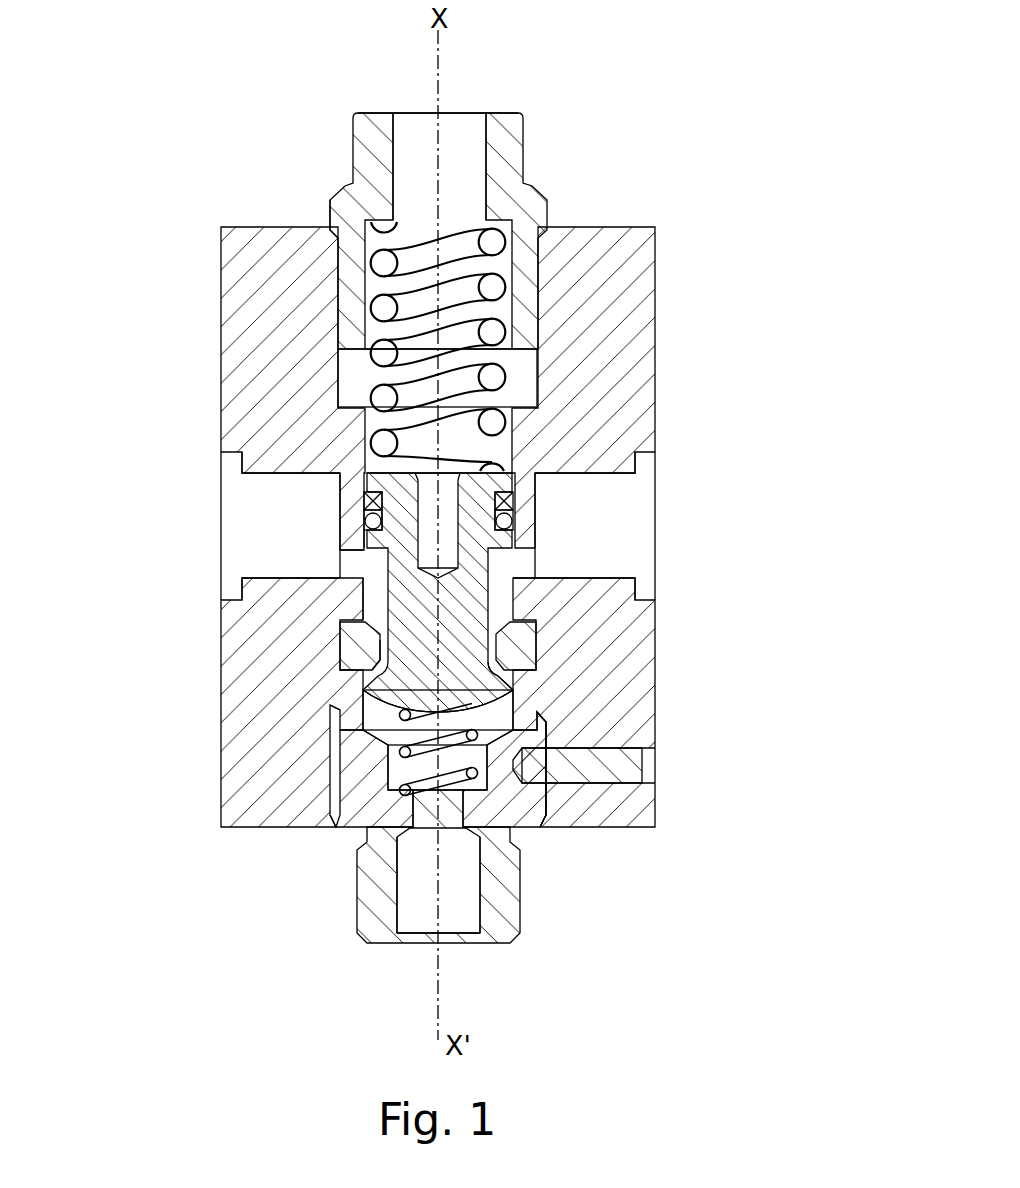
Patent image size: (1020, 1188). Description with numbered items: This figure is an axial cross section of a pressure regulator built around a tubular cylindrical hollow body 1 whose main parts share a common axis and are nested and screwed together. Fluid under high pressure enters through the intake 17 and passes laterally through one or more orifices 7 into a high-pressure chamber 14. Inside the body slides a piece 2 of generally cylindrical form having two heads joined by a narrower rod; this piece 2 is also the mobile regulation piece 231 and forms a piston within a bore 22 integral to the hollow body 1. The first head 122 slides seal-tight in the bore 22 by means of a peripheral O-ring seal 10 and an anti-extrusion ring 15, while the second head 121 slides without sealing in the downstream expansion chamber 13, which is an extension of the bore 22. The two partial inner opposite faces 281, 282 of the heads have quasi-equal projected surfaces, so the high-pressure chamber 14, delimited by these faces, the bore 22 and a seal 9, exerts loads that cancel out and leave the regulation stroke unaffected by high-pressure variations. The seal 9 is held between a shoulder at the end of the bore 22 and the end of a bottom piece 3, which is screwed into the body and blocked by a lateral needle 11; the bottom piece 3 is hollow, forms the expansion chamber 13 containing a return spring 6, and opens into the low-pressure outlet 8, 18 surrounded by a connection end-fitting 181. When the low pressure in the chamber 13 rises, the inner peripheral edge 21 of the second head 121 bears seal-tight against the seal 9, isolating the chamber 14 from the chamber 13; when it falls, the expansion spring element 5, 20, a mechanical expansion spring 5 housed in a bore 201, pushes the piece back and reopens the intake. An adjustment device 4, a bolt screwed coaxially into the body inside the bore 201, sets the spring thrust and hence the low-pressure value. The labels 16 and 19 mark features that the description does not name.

The hollow body 1 is at (598, 245).
The piece of generally cylindrical form with two heads 2 is at (497, 613).
The bottom piece 3 is at (527, 735).
The adjustment device 4 is at (498, 146).
The mechanical expansion spring 5 is at (488, 327).
The return spring 6 is at (480, 780).
The orifices 7 is at (347, 564).
The low-pressure outlet 8 is at (455, 895).
The seal 9 is at (508, 643).
The peripheral O-ring seal 10 is at (506, 522).
The lateral needle 11 is at (603, 766).
The second head 121 is at (473, 700).
The first head 122 is at (383, 484).
The downstream expansion chamber 13 is at (383, 724).
The high-pressure chamber 14 is at (452, 606).
The anti-extrusion ring 15 is at (505, 497).
The port 16 is at (626, 571).
The intake 17 is at (262, 536).
The outlet 18 is at (422, 905).
The connection end-fitting 181 is at (510, 895).
The vent bore 19 is at (446, 132).
The expansion spring element 20 is at (357, 378).
The bore 201 is at (333, 263).
The inner peripheral edge 21 is at (361, 680).
The bore 22 is at (362, 538).
The mobile regulation piece 231 is at (500, 676).
The partial inner face 281 is at (366, 664).
The partial inner face 282 is at (373, 558).